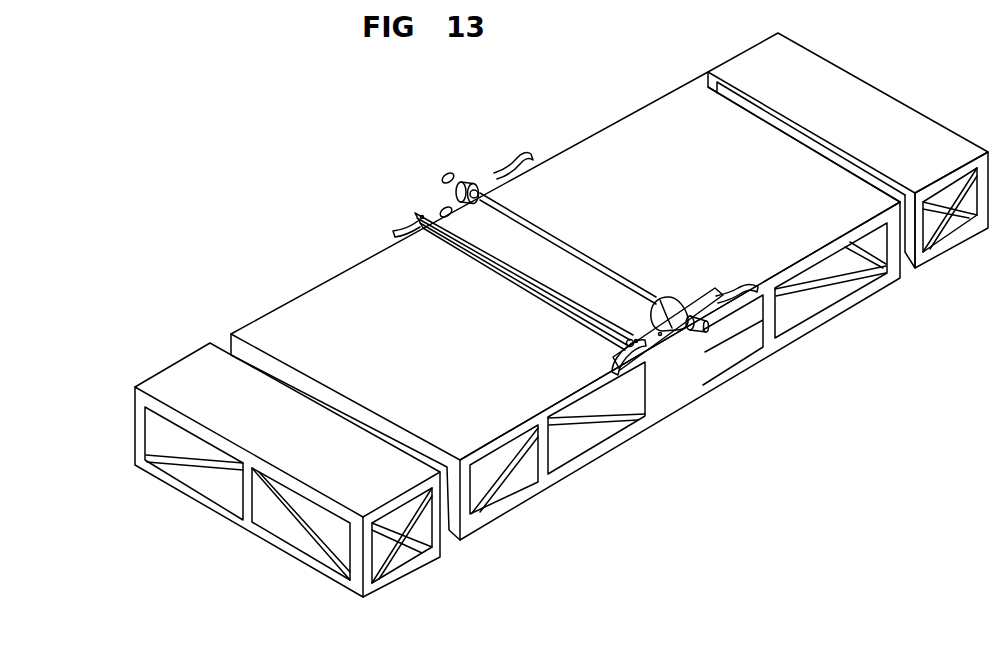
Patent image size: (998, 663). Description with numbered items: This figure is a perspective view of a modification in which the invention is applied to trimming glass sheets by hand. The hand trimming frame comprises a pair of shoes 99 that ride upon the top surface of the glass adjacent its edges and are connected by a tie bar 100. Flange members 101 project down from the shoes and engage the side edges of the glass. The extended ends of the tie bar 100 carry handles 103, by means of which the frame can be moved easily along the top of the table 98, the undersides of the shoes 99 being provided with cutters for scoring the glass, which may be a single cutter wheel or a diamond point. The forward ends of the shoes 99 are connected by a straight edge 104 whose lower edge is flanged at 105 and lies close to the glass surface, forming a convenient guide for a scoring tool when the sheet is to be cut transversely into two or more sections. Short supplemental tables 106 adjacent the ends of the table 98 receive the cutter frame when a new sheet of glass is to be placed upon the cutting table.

The table 98 is at (468, 507).
The shoe 99 is at (457, 189).
The tie bar 100 is at (592, 262).
The flange member 101 is at (525, 160).
The handle 103 is at (447, 176).
The straight edge 104 is at (565, 300).
The flange 105 is at (477, 266).
The supplemental table 106 is at (172, 377).